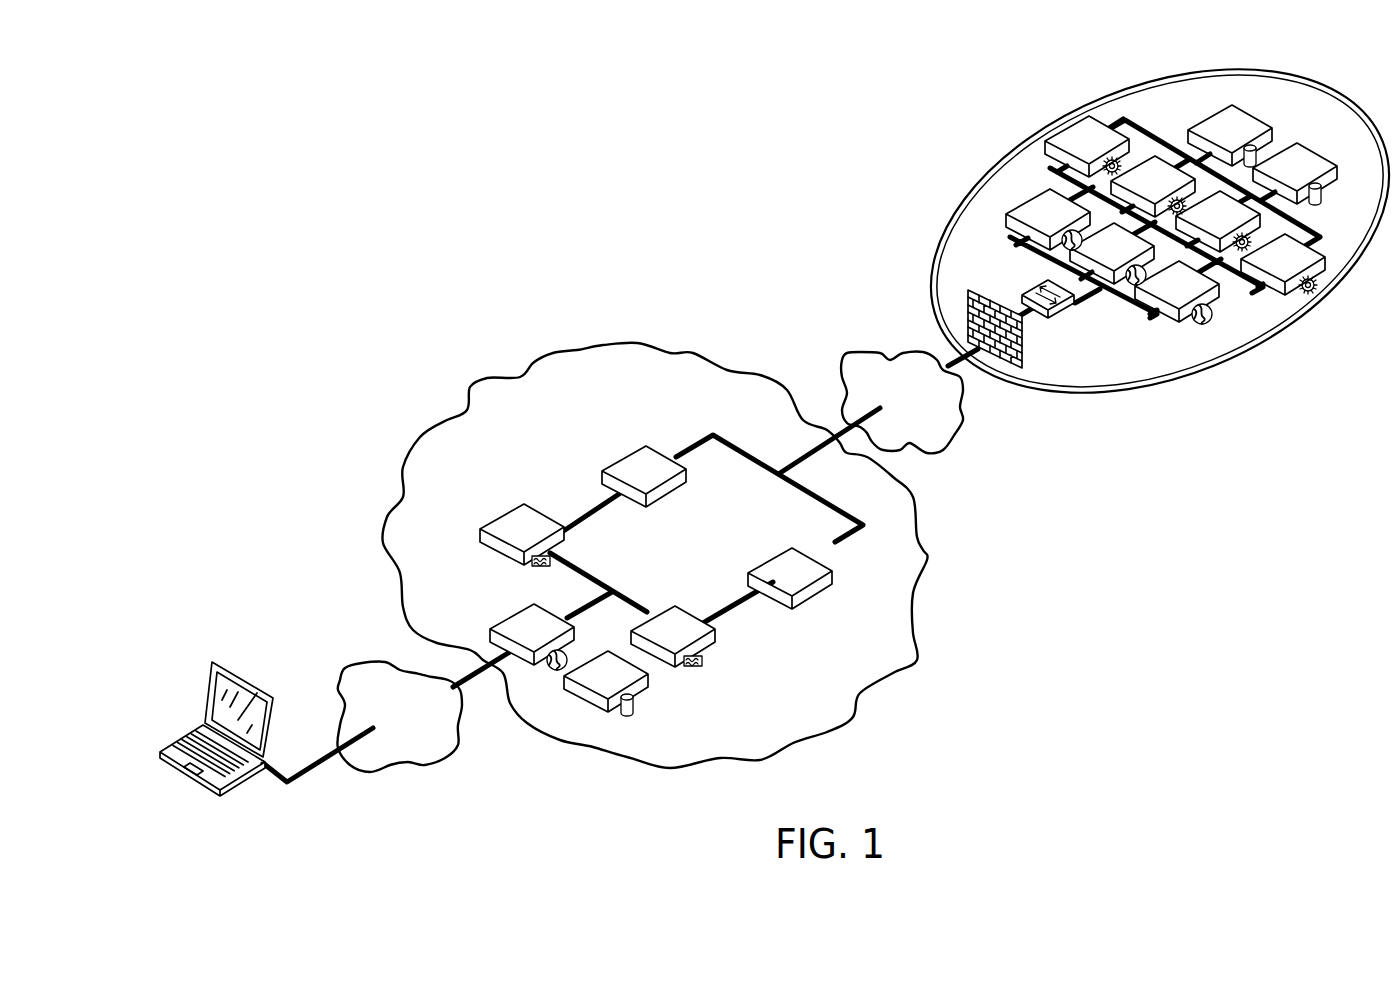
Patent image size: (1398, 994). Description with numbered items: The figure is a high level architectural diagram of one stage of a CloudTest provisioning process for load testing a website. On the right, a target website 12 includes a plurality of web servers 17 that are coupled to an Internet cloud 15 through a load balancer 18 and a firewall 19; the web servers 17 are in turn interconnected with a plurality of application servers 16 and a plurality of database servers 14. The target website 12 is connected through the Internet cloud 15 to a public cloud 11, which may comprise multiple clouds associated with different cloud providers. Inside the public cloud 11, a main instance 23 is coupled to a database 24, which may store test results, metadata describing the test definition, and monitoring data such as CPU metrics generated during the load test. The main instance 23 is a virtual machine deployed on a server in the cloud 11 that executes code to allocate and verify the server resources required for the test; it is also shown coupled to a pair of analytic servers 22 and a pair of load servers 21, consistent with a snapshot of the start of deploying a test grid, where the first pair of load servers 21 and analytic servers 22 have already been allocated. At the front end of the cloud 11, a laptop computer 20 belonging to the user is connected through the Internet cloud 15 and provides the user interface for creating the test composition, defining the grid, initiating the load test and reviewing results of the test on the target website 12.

The public cloud 11 is at (913, 655).
The target website 12 is at (1196, 405).
The database servers 14 is at (1293, 160).
The Internet cloud 15 is at (330, 640).
The application servers 16 is at (1213, 212).
The web servers 17 is at (1172, 283).
The load balancer 18 is at (1038, 290).
The firewall 19 is at (985, 310).
The laptop computer 20 is at (185, 745).
The load servers 21 is at (783, 552).
The analytic servers 22 is at (670, 622).
The main instance 23 is at (523, 628).
The database 24 is at (612, 678).